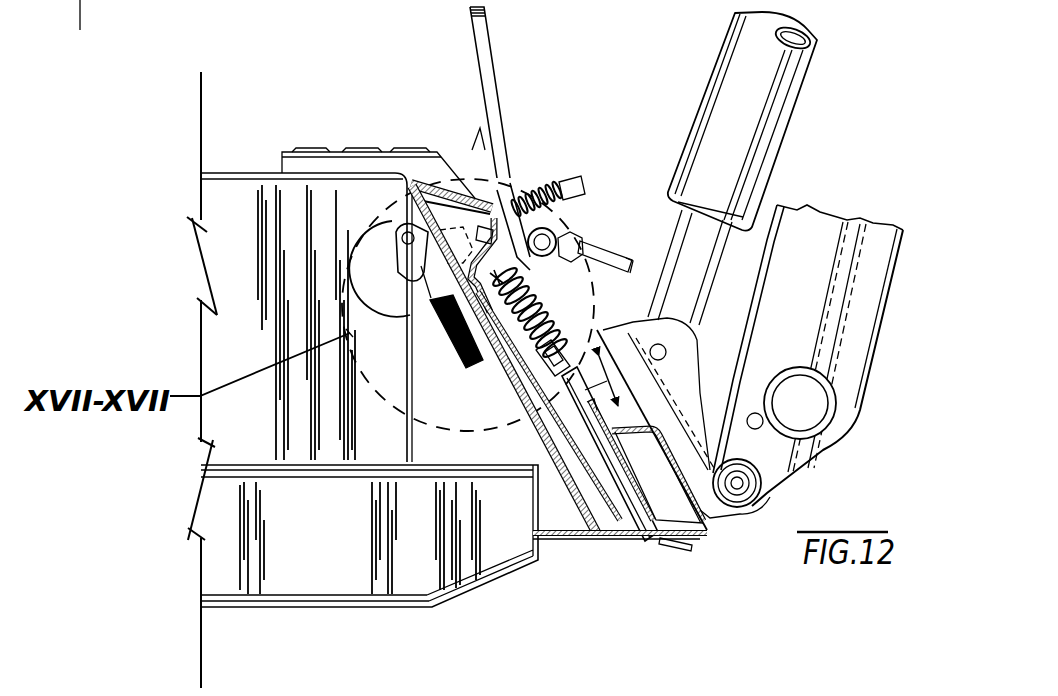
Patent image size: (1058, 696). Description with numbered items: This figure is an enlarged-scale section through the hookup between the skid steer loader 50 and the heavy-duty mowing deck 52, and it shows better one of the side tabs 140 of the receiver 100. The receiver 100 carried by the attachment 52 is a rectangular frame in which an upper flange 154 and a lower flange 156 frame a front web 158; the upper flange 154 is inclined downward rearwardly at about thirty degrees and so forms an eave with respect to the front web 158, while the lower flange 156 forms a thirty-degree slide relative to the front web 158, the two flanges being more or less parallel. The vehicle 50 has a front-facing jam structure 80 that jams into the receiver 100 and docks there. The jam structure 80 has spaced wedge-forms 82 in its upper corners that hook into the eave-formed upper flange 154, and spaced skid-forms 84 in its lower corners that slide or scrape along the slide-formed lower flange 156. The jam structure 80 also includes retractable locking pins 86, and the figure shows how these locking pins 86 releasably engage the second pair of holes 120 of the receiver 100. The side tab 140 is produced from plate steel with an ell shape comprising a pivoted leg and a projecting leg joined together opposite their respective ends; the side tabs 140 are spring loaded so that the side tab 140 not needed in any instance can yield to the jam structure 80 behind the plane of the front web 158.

The skid steer loader 50 is at (818, 222).
The heavy-duty mowing deck 52 is at (303, 563).
The jam structure 80 is at (525, 412).
The wedge-forms 82 is at (500, 178).
The skid-forms 84 is at (703, 530).
The retractable locking pins 86 is at (650, 550).
The receiver 100 is at (450, 192).
The second pair of holes 120 is at (627, 537).
The side tab 140 is at (352, 228).
The upper flange 154 is at (450, 193).
The lower flange 156 is at (570, 537).
The front web 158 is at (548, 272).